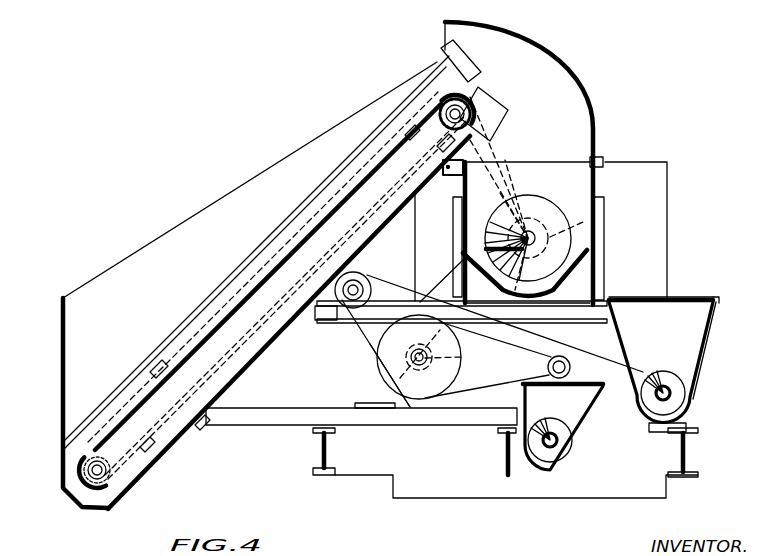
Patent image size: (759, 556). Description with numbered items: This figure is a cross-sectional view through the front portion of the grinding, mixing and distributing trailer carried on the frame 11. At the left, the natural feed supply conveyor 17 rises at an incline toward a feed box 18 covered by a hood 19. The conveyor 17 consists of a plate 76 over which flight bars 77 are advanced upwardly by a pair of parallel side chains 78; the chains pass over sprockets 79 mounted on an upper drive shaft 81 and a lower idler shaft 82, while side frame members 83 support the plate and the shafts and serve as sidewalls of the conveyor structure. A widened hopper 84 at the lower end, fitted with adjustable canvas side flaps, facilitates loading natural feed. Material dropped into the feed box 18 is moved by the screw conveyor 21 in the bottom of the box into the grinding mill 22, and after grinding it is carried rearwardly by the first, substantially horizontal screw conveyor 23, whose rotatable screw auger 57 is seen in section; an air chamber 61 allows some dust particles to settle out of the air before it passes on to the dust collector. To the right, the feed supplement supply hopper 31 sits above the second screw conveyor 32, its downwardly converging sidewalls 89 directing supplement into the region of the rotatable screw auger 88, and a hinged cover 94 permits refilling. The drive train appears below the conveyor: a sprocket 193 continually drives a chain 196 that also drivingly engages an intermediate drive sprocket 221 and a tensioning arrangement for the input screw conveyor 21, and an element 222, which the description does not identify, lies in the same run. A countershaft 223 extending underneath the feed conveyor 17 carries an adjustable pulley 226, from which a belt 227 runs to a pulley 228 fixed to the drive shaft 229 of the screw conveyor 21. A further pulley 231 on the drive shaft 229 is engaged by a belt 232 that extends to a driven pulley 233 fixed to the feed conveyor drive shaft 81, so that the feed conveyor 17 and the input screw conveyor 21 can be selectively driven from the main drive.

The frame 11 is at (333, 483).
The natural feed supply conveyor 17 is at (123, 252).
The feed box 18 is at (572, 172).
The hood 19 is at (572, 76).
The screw conveyor 21 is at (543, 218).
The grinding mill 22 is at (672, 160).
The first screw conveyor 23 is at (498, 481).
The feed supplement supply hopper 31 is at (712, 348).
The second screw conveyor 32 is at (690, 413).
The screw auger 57 is at (566, 446).
The air chamber 61 is at (522, 400).
The plate 76 is at (237, 320).
The flight bars 77 is at (158, 372).
The side chains 78 is at (107, 437).
The sprockets 79 is at (467, 100).
The upper drive shaft 81 is at (455, 91).
The lower idler shaft 82 is at (100, 483).
The side frame members 83 is at (356, 163).
The widened hopper 84 is at (70, 325).
The screw auger 88 is at (678, 392).
The downwardly converging sidewalls 89 is at (712, 334).
The hinged cover 94 is at (698, 299).
The sprocket 193 is at (343, 308).
The chain 196 is at (360, 351).
The intermediate drive sprocket 221 is at (386, 370).
The idler 222 is at (559, 378).
The countershaft 223 is at (418, 358).
The adjustable pulley 226 is at (458, 358).
The belt 227 is at (467, 334).
The pulley 228 is at (604, 220).
The drive shaft 229 is at (583, 258).
The further pulley 231 is at (541, 225).
The belt 232 is at (493, 140).
The driven pulley 233 is at (496, 94).